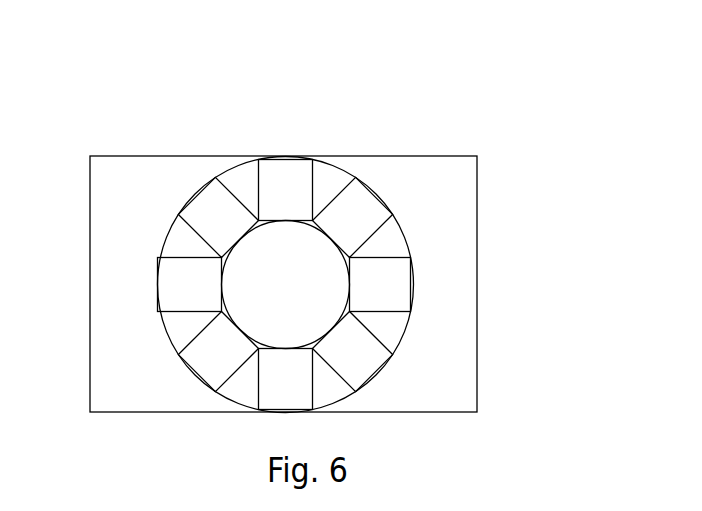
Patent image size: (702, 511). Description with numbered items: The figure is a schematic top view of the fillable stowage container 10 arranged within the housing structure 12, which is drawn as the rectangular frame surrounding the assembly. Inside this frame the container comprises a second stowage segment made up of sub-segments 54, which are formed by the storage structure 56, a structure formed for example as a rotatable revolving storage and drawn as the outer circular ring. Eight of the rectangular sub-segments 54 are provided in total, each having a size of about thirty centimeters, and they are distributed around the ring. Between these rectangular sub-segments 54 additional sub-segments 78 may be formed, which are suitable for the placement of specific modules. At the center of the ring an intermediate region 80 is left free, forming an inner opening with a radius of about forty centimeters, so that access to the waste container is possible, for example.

The fillable stowage container 10 is at (158, 104).
The housing structure 12 is at (112, 155).
The sub-segment 54 is at (363, 205).
The storage structure 56 is at (349, 155).
The additional sub-segment 78 is at (246, 177).
The intermediate region 80 is at (335, 283).